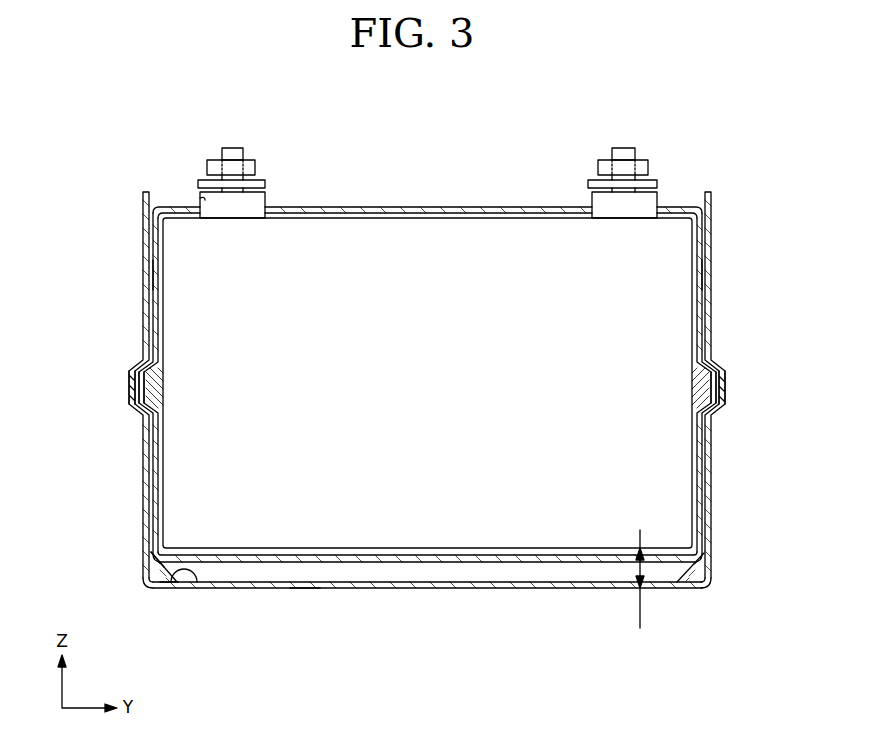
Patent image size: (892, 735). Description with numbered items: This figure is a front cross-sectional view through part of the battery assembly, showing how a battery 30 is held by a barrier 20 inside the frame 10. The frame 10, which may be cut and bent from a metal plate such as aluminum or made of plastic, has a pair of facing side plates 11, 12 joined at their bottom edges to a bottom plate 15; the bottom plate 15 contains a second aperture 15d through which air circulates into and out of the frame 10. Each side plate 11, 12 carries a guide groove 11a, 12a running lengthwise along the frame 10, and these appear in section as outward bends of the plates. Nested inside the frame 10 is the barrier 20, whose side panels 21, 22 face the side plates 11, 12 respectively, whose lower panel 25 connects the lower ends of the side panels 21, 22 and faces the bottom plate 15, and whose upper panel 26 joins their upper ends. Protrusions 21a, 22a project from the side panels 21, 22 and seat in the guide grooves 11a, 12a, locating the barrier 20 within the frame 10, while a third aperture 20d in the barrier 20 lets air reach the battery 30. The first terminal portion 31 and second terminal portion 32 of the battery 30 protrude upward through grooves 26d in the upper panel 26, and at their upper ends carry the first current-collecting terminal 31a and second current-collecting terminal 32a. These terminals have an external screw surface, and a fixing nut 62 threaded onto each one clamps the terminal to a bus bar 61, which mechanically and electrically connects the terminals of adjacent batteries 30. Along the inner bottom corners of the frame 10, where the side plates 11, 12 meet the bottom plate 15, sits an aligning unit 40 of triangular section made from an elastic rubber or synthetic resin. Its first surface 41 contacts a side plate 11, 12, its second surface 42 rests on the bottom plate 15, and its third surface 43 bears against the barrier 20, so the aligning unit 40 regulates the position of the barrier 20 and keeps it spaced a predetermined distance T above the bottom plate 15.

The frame 10 is at (427, 374).
The side plate 11 is at (143, 506).
The guide groove 11a is at (128, 386).
The side plate 12 is at (711, 470).
The guide groove 12a is at (727, 385).
The bottom plate 15 is at (423, 589).
The second aperture 15d is at (303, 589).
The barrier 20 is at (430, 388).
The third aperture 20d is at (150, 274).
The side panel 21 is at (152, 229).
The protrusion 21a is at (134, 408).
The side panel 22 is at (711, 223).
The protrusion 22a is at (724, 369).
The lower panel 25 is at (363, 563).
The upper panel 26 is at (323, 207).
The groove 26d is at (204, 197).
The battery 30 is at (537, 548).
The first terminal portion 31 is at (248, 203).
The first current-collecting terminal 31a is at (232, 148).
The second terminal portion 32 is at (640, 203).
The second current-collecting terminal 32a is at (626, 148).
The aligning unit 40 is at (146, 584).
The first surface 41 is at (152, 567).
The second surface 42 is at (168, 584).
The third surface 43 is at (196, 579).
The bus bar 61 is at (590, 183).
The fixing nut 62 is at (598, 168).